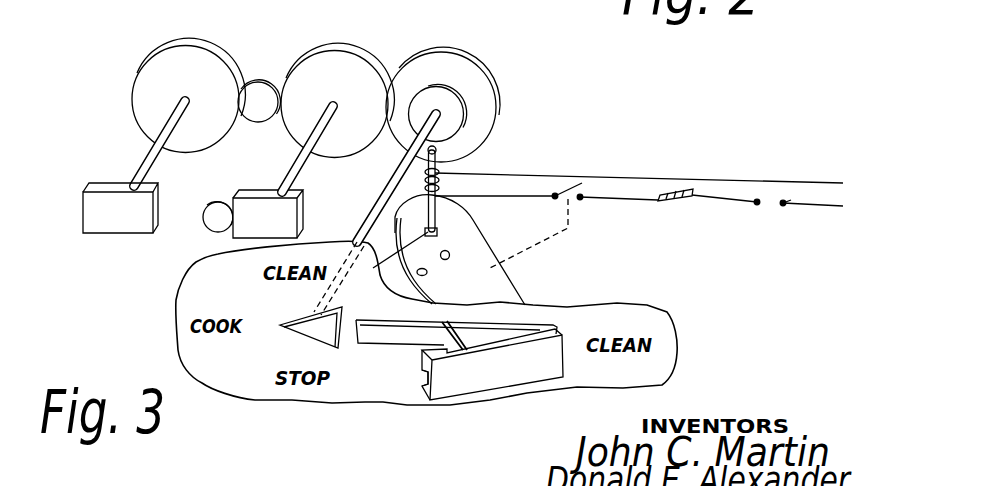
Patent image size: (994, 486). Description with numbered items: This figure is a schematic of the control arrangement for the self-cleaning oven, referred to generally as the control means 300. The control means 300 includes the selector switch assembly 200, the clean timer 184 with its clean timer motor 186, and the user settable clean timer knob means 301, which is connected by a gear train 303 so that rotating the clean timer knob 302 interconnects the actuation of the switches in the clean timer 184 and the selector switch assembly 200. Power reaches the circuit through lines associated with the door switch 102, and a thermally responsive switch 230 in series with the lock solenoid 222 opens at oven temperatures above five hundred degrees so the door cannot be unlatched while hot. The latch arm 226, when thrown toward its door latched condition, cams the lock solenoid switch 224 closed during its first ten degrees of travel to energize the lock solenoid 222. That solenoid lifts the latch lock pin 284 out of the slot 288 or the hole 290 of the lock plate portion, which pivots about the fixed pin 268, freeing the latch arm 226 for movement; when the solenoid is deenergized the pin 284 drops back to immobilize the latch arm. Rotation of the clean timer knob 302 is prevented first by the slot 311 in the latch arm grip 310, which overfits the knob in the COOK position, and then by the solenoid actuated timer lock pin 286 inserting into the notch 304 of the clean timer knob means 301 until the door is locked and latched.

The door switch 102 is at (767, 204).
The clean timer 184 is at (258, 190).
The clean timer motor 186 is at (206, 211).
The selector switch assembly 200 is at (83, 232).
The lock solenoid 222 is at (438, 183).
The lock solenoid switch 224 is at (575, 186).
The latch arm 226 is at (508, 293).
The thermally responsive switch 230 is at (673, 203).
The fixed pin 268 is at (449, 252).
The latch lock pin 284 is at (428, 231).
The timer lock pin 286 is at (443, 150).
The slot 288 is at (426, 274).
The hole 290 is at (389, 261).
The control means 300 is at (136, 136).
The clean timer knob means 301 is at (395, 170).
The clean timer knob 302 is at (305, 330).
The gear train 303 is at (318, 51).
The notch 304 is at (444, 132).
The latch arm grip 310 is at (442, 393).
The slot 311 is at (420, 376).